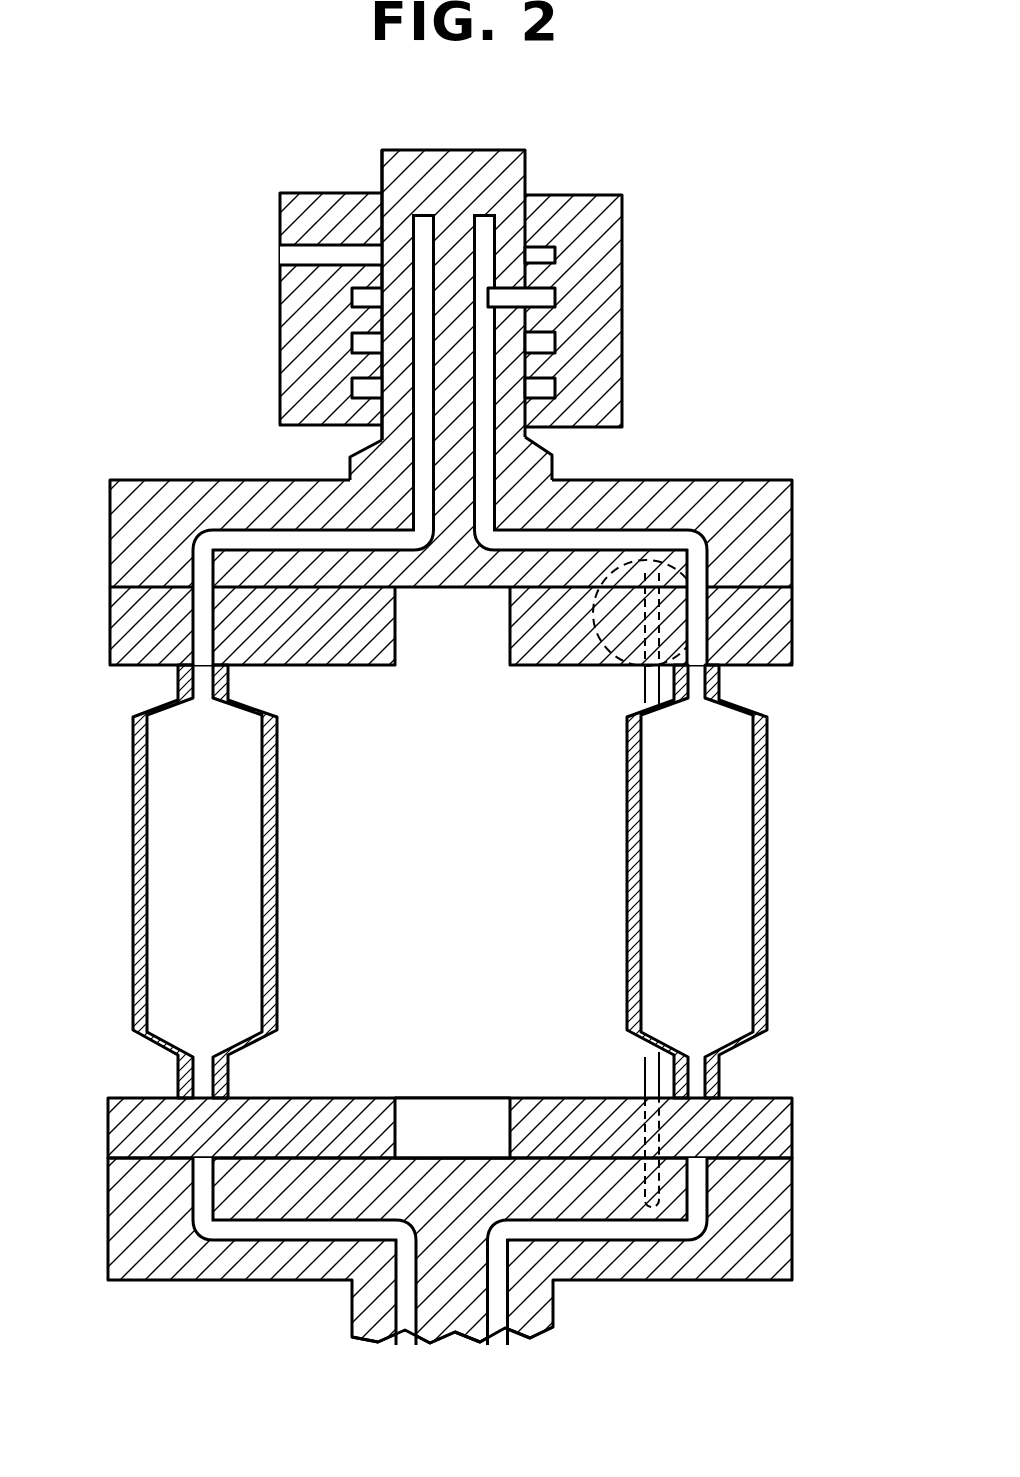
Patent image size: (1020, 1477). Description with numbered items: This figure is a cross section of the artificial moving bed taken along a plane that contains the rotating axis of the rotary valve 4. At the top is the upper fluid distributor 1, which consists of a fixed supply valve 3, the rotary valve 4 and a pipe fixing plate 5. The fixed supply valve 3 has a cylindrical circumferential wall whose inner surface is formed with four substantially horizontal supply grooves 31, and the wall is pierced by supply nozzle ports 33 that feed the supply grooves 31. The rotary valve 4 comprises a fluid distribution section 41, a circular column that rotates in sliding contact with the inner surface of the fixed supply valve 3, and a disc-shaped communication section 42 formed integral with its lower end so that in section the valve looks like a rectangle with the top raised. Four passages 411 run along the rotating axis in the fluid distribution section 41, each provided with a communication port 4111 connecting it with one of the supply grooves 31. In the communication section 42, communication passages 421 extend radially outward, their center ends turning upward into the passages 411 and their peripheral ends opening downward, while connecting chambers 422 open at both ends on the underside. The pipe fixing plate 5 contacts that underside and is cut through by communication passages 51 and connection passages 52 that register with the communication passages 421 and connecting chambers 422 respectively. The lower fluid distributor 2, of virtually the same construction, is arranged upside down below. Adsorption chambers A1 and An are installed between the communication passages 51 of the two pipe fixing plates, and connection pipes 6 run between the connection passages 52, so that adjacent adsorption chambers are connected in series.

The upper fluid distributor 1 is at (720, 480).
The lower fluid distributor 2 is at (765, 1208).
The fixed supply valve 3 is at (612, 228).
The supply grooves 31 is at (545, 247).
The supply nozzle ports 33 is at (298, 255).
The rotary valve 4 is at (775, 523).
The fluid distribution section 41 is at (365, 435).
The passages 411 is at (549, 448).
The communication port 4111 is at (545, 330).
The communication section 42 is at (792, 500).
The communication passages 421 is at (700, 528).
The connecting chambers 422 is at (640, 588).
The pipe fixing plate 5 is at (762, 668).
The communication passage 51 is at (700, 620).
The connection passage 52 is at (600, 672).
The connection pipes 6 is at (647, 690).
The adsorption chamber An is at (188, 855).
The adsorption chamber A1 is at (724, 896).